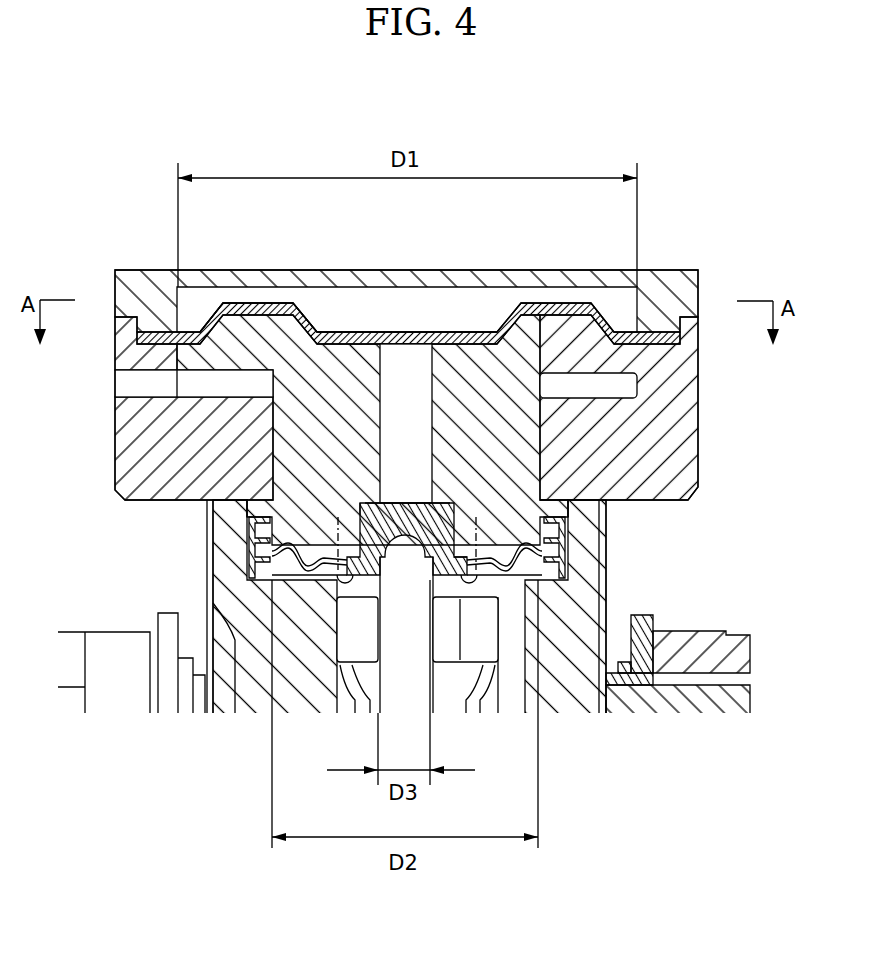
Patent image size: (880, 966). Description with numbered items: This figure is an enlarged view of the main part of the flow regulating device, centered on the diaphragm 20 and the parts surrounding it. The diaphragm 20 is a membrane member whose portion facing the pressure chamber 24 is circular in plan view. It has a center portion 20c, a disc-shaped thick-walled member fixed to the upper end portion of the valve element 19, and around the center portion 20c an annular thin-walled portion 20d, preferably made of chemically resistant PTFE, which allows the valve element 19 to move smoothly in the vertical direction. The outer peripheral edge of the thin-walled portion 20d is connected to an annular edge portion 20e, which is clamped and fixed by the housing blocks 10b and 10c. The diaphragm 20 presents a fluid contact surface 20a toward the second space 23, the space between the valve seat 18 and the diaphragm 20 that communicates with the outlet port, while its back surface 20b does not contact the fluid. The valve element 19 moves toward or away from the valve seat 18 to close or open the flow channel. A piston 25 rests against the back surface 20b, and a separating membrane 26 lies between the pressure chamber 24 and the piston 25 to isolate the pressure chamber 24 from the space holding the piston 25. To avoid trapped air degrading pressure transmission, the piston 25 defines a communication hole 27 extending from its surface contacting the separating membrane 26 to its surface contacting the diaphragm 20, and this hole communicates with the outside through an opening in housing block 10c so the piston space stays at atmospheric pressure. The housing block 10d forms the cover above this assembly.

The housing block 10b is at (606, 525).
The housing block 10c is at (676, 470).
The upper housing cover 10d is at (684, 290).
The valve seat 18 is at (342, 680).
The valve element 19 is at (417, 624).
The diaphragm 20 is at (358, 492).
The fluid contact surface 20a is at (358, 500).
The back surface 20b is at (466, 558).
The center portion 20c is at (413, 503).
The thin-walled portion 20d is at (546, 500).
The annular edge portion 20e is at (563, 545).
The second space 23 is at (304, 585).
The pressure chamber 24 is at (462, 300).
The piston 25 is at (261, 328).
The separating membrane 26 is at (340, 338).
The communication hole 27 is at (407, 383).